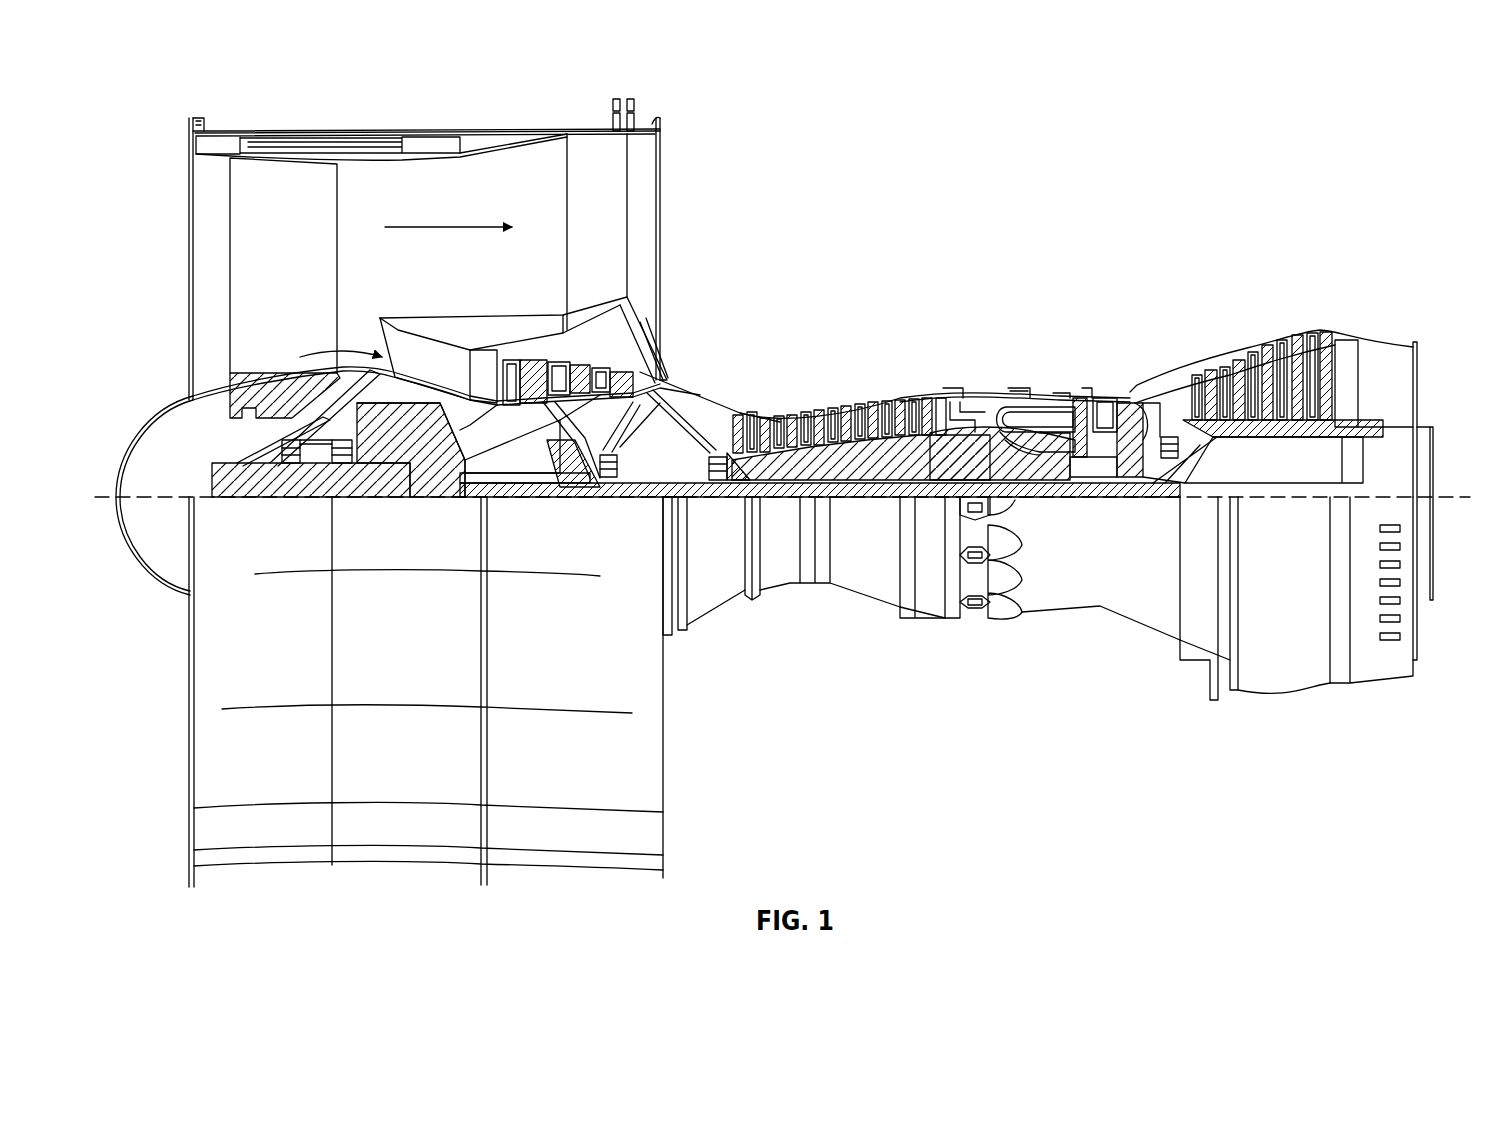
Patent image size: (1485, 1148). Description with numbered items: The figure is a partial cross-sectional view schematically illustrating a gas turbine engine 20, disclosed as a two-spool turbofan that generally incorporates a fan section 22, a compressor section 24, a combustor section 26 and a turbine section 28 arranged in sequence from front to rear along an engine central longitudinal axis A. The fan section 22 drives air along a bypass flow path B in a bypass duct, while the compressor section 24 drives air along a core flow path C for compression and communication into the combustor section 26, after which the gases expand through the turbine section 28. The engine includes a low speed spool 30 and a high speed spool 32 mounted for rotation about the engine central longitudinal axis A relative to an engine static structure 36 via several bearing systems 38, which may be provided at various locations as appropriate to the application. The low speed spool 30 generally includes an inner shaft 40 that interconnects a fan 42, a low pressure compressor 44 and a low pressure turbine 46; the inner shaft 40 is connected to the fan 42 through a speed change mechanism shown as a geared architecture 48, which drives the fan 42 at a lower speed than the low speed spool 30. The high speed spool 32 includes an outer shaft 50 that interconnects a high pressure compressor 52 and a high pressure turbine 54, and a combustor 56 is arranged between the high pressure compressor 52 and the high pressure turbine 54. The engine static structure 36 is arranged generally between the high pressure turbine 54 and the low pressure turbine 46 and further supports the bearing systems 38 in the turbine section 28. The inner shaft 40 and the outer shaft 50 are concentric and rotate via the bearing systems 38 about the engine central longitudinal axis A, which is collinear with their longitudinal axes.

The gas turbine engine 20 is at (1240, 168).
The fan section 22 is at (458, 117).
The compressor section 24 is at (852, 352).
The combustor section 26 is at (1022, 352).
The turbine section 28 is at (1167, 330).
The low speed spool 30 is at (885, 505).
The high speed spool 32 is at (945, 432).
The engine static structure 36 is at (924, 620).
The bearing systems 38 is at (290, 468).
The inner shaft 40 is at (680, 500).
The fan 42 is at (305, 250).
The low pressure compressor 44 is at (578, 378).
The low pressure turbine 46 is at (1268, 366).
The geared architecture 48 is at (430, 468).
The outer shaft 50 is at (1063, 482).
The high pressure compressor 52 is at (840, 447).
The high pressure turbine 54 is at (1105, 393).
The combustor 56 is at (1030, 410).
The engine central longitudinal axis A is at (1437, 490).
The bypass flow path B is at (460, 226).
The core flow path C is at (316, 352).